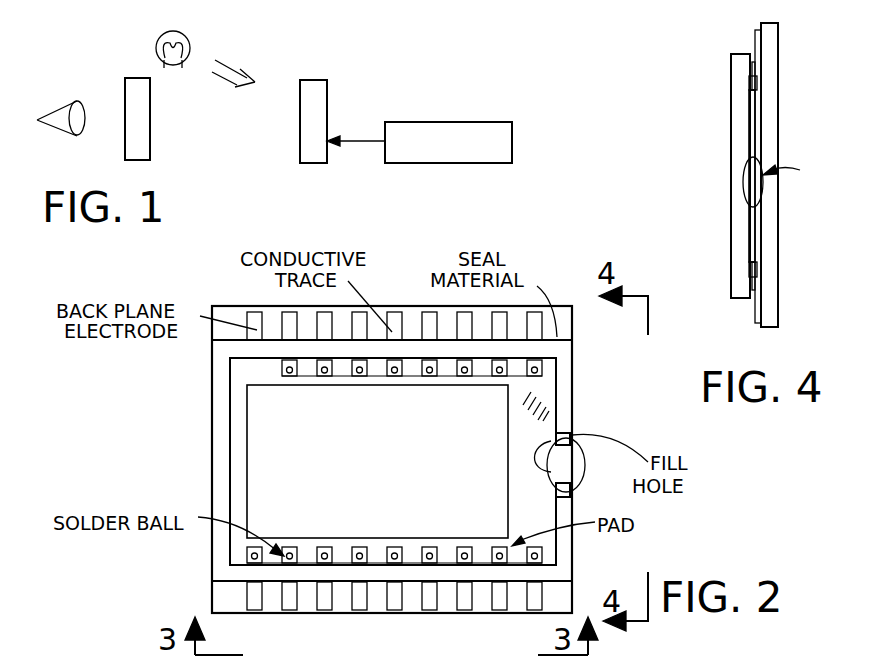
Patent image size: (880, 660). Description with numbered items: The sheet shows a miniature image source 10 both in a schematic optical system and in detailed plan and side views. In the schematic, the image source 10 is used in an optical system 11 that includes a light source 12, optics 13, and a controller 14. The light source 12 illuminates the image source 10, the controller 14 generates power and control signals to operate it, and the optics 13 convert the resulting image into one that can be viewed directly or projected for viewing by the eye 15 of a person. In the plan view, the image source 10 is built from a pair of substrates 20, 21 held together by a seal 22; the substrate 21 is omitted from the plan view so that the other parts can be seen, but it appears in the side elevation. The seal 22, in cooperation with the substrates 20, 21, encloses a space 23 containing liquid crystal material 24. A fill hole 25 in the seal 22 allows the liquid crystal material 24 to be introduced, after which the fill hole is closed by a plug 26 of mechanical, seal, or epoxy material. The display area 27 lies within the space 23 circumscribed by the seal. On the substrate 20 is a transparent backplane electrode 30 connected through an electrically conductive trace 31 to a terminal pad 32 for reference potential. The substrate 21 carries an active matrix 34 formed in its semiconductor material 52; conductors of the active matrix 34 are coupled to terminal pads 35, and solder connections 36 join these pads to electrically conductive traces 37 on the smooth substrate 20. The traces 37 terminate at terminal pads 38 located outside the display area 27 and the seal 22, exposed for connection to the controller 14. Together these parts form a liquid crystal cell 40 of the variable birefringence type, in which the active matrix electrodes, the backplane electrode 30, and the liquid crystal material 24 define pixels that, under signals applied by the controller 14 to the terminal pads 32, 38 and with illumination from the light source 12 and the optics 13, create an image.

In FIG. 1, the image source 10 is at (331, 172).
In FIG. 2, the image source 10 is at (146, 370).
In FIG. 4, the image source 10 is at (820, 94).
In FIG. 1, the optical system 11 is at (229, 153).
In FIG. 1, the light source 12 is at (188, 37).
In FIG. 1, the optics 13 is at (133, 78).
In FIG. 1, the controller 14 is at (422, 163).
In FIG. 1, the eye 15 is at (61, 104).
In FIG. 2, the substrate 20 is at (212, 330).
In FIG. 4, the substrate 20 is at (768, 38).
In FIG. 4, the substrate 21 is at (731, 63).
In FIG. 2, the seal 22 is at (222, 385).
In FIG. 4, the seal 22 is at (757, 126).
In FIG. 2, the space 23 is at (557, 384).
In FIG. 2, the liquid crystal material 24 is at (543, 413).
In FIG. 2, the fill hole 25 is at (542, 480).
In FIG. 2, the plug 26 is at (585, 463).
In FIG. 4, the plug 26 is at (743, 182).
In FIG. 2, the display area 27 is at (524, 511).
In FIG. 2, the transparent electrode 30 is at (250, 437).
In FIG. 2, the electrically conductive trace 31 is at (257, 373).
In FIG. 2, the terminal pad 32 is at (252, 315).
In FIG. 4, the active matrix array 34 is at (739, 248).
In FIG. 4, the terminal pads 35 is at (749, 80).
In FIG. 2, the solder connections 36 is at (250, 555).
In FIG. 4, the solder connections 36 is at (760, 78).
In FIG. 2, the electrically conductive traces 37 is at (248, 563).
In FIG. 4, the electrically conductive traces 37 is at (755, 62).
In FIG. 2, the terminal pads 38 is at (259, 601).
In FIG. 4, the terminal pads 38 is at (757, 30).
In FIG. 2, the liquid crystal cell 40 is at (215, 487).
In FIG. 4, the semiconductor material 52 is at (772, 315).